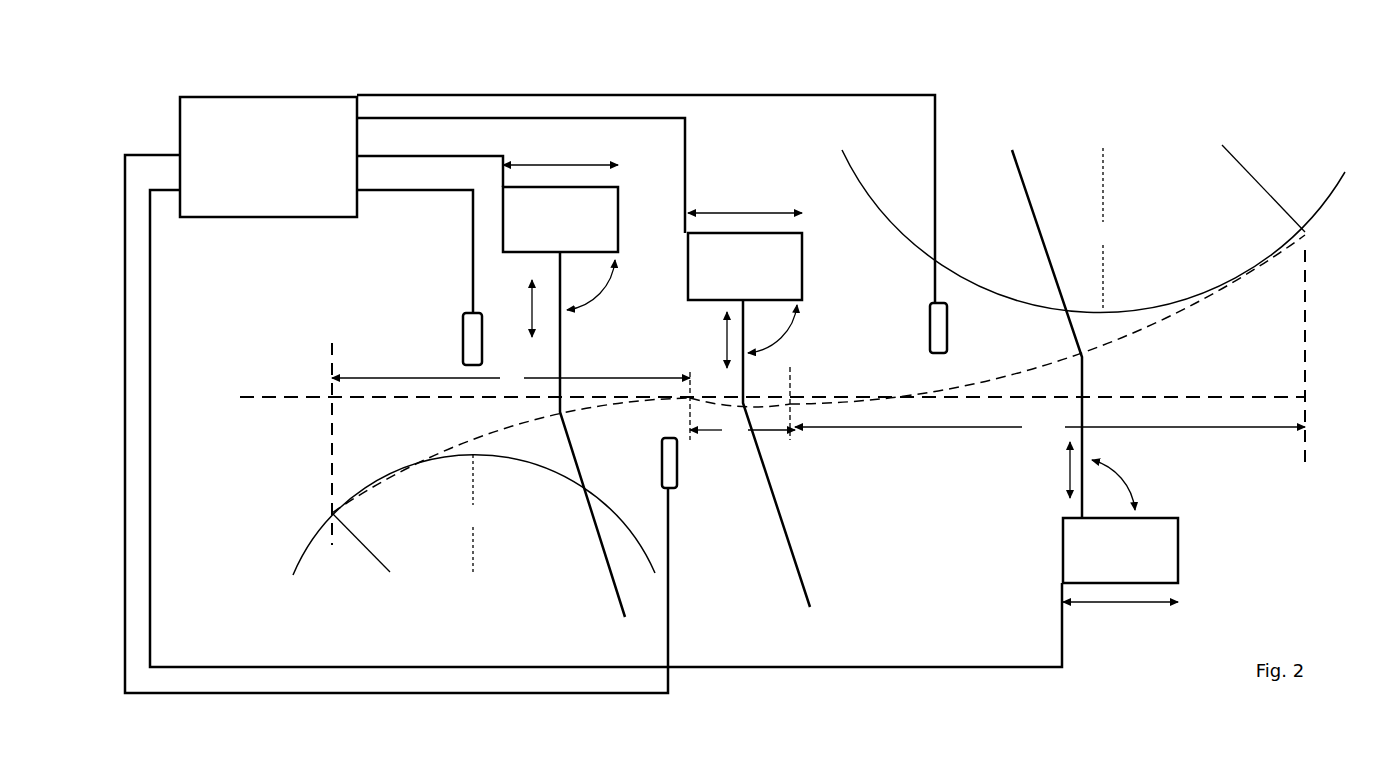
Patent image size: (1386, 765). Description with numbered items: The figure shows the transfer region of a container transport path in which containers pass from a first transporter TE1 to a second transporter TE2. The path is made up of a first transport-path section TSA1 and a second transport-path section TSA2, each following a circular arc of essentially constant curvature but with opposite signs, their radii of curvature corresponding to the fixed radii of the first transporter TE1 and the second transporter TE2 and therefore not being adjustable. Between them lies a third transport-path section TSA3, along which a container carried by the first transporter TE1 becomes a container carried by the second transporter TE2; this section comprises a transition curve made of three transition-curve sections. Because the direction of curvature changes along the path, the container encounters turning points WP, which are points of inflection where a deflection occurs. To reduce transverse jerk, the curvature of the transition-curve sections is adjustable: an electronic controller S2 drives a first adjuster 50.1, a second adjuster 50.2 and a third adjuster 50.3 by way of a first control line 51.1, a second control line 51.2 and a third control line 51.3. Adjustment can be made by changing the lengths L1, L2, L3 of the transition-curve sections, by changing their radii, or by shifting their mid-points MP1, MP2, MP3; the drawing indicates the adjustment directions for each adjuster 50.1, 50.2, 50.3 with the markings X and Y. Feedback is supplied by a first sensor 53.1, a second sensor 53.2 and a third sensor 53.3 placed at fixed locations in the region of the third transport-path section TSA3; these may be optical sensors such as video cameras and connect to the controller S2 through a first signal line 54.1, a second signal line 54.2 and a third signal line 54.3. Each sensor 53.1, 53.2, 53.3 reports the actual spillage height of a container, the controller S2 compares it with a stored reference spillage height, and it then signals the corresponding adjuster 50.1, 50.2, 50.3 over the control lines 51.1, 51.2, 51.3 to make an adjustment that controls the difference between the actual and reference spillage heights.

The electronic controller S2 is at (268, 157).
The first adjuster 50.1 is at (560, 219).
The second adjuster 50.2 is at (745, 266).
The third adjuster 50.3 is at (1120, 550).
The first control line 51.1 is at (420, 156).
The second control line 51.2 is at (600, 118).
The third control line 51.3 is at (905, 665).
The first sensor 53.1 is at (461, 320).
The second sensor 53.2 is at (659, 450).
The third sensor 53.3 is at (922, 340).
The first signal line 54.1 is at (427, 191).
The second signal line 54.2 is at (308, 692).
The third signal line 54.3 is at (815, 95).
The mid-point of first transition-curve section MP1 is at (608, 447).
The mid-point of second transition-curve section MP2 is at (791, 465).
The mid-point of third transition-curve section MP3 is at (1039, 329).
The first transporter TE1 is at (640, 541).
The second transporter TE2 is at (834, 153).
The first transport-path section TSA1 is at (292, 548).
The second transport-path section TSA2 is at (1330, 183).
The third transport-path section TSA3 is at (922, 422).
The turning point WP is at (690, 388).
The x-direction adjustment X is at (840, 385).
The y-direction adjustment Y is at (791, 389).
The length of first transition-curve section L1 is at (511, 379).
The length of second transition-curve section L2 is at (742, 430).
The length of third transition-curve section L3 is at (1050, 427).